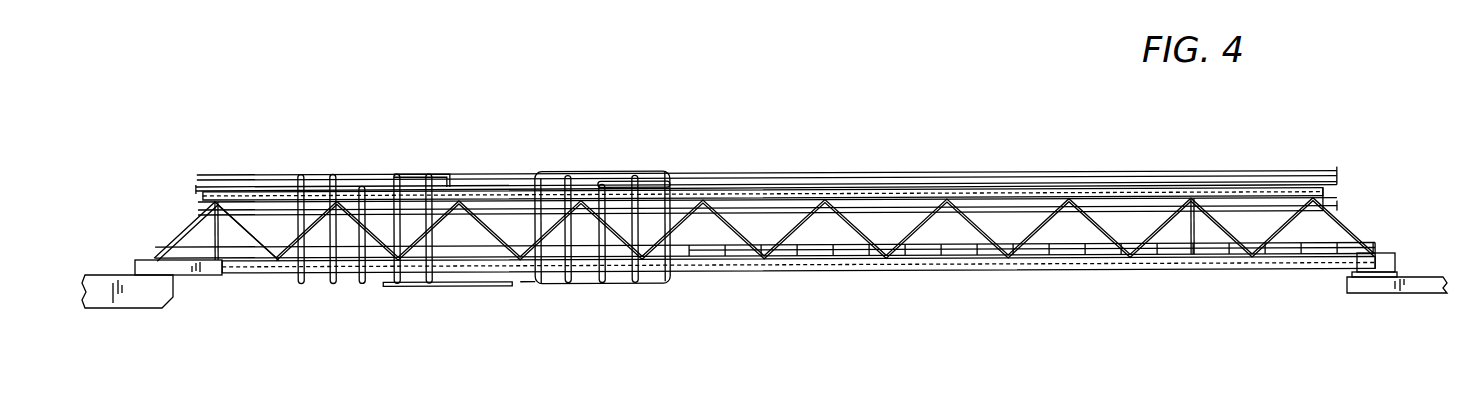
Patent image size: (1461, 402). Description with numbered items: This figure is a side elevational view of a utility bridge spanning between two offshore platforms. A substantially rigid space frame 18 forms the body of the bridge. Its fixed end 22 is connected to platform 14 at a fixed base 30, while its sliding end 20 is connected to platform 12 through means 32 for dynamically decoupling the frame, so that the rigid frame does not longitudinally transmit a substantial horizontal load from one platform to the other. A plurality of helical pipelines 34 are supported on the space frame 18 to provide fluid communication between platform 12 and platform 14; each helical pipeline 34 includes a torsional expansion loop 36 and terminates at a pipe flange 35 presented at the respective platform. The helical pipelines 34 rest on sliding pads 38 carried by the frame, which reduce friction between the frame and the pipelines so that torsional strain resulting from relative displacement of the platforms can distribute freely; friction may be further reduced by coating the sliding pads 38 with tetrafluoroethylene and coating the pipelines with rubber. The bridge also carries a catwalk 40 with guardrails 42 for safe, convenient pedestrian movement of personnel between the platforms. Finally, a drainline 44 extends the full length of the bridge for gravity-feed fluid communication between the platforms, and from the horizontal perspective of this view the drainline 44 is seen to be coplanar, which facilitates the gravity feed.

The platform 12 is at (138, 297).
The platform 14 is at (1385, 287).
The space frame 18 is at (503, 192).
The sliding end 20 is at (205, 303).
The fixed end 22 is at (1308, 290).
The fixed base 30 is at (1387, 262).
The means for dynamically decoupling the frame 32 is at (147, 262).
The helical pipeline 34 is at (330, 175).
The pipe flange 35 is at (198, 175).
The torsional expansion loop 36 is at (552, 302).
The sliding pad 38 is at (442, 177).
The catwalk 40 is at (833, 250).
The guardrail 42 is at (793, 255).
The drainline 44 is at (770, 207).